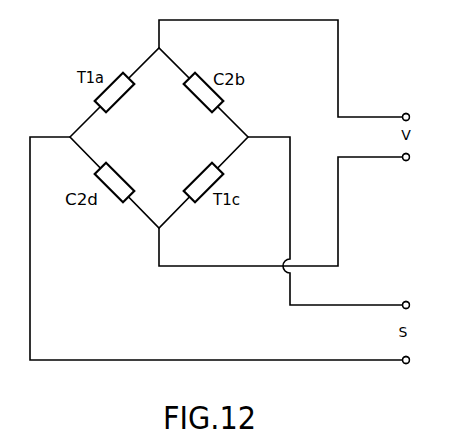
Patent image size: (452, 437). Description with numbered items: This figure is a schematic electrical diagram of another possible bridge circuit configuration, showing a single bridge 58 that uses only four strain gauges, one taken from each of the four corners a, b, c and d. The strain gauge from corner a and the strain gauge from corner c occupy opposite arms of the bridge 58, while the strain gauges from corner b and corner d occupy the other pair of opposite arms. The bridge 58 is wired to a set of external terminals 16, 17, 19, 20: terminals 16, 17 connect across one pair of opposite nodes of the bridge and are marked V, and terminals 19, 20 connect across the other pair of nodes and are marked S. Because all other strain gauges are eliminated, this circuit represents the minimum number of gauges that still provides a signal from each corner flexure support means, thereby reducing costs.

The single bridge 58 is at (170, 145).
The terminal 16 is at (373, 117).
The terminal 17 is at (373, 157).
The terminal 19 is at (370, 305).
The terminal 20 is at (363, 360).